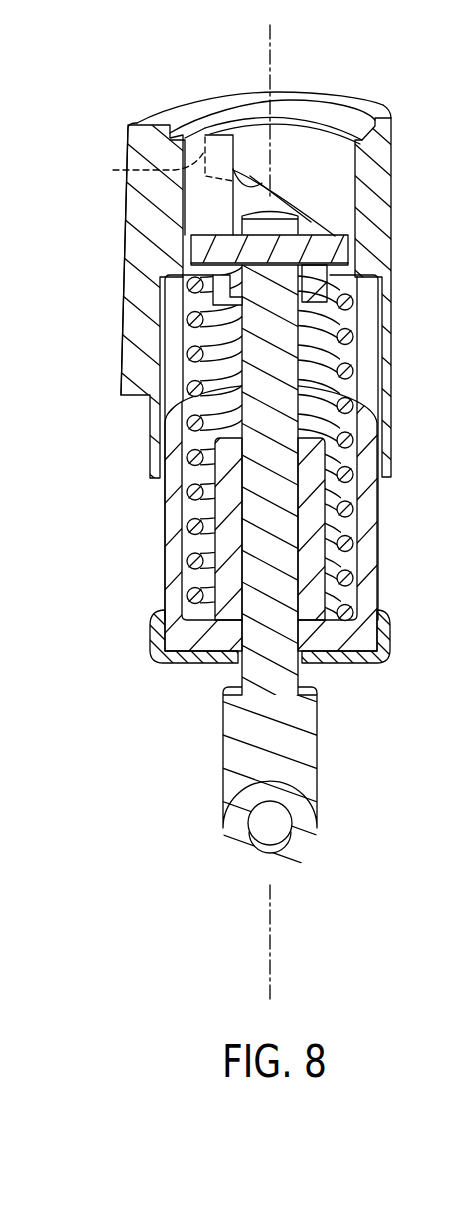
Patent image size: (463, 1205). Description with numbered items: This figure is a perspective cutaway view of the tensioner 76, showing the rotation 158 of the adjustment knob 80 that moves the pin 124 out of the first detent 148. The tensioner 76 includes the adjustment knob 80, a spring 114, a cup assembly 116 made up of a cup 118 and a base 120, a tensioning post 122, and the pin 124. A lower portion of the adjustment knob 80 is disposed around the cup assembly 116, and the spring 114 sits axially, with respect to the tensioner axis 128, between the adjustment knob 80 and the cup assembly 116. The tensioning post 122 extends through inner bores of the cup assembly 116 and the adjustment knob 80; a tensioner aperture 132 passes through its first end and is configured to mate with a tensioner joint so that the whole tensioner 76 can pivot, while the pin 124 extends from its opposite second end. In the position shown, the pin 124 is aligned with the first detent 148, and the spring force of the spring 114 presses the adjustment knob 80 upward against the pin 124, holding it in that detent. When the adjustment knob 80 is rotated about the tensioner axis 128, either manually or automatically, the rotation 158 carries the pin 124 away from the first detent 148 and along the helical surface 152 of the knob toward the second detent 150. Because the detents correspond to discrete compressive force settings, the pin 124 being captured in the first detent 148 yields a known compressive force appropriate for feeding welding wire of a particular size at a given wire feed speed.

The tensioner 76 is at (100, 342).
The adjustment knob 80 is at (393, 392).
The spring 114 is at (346, 548).
The cup assembly 116 is at (137, 478).
The cup 118 is at (165, 522).
The base 120 is at (163, 657).
The tensioning post 122 is at (292, 347).
The pin 124 is at (338, 275).
The tensioner axis 128 is at (270, 37).
The tensioner aperture 132 is at (287, 824).
The first detent 148 is at (188, 247).
The second detent 150 is at (154, 161).
The helical surface 152 is at (318, 224).
The rotation 158 is at (145, 68).